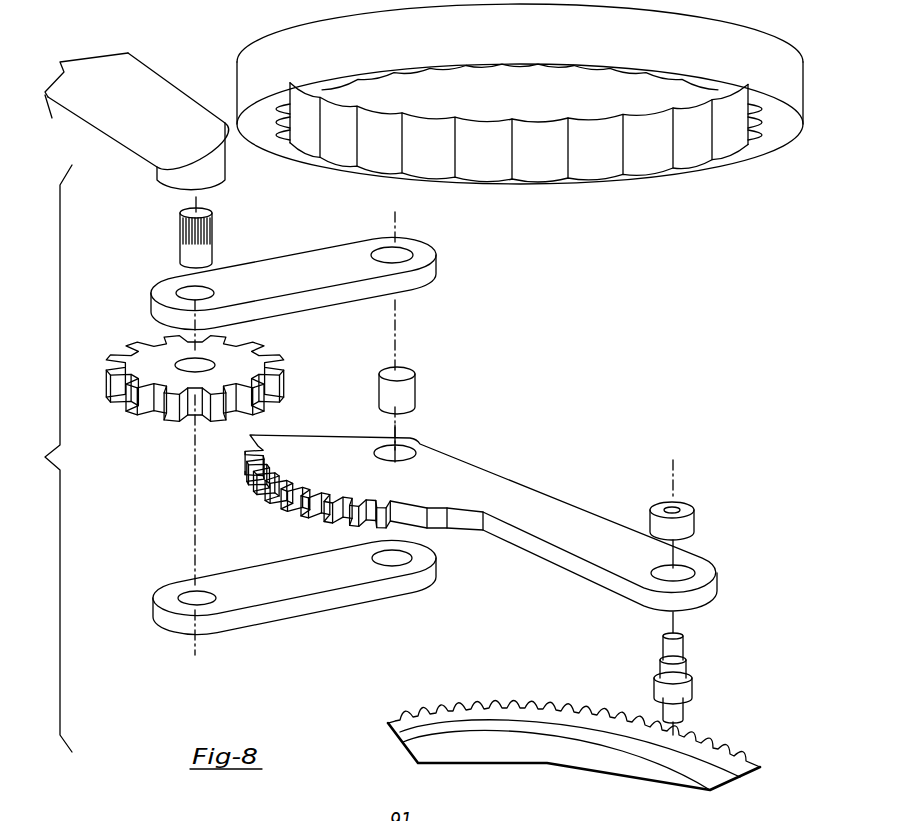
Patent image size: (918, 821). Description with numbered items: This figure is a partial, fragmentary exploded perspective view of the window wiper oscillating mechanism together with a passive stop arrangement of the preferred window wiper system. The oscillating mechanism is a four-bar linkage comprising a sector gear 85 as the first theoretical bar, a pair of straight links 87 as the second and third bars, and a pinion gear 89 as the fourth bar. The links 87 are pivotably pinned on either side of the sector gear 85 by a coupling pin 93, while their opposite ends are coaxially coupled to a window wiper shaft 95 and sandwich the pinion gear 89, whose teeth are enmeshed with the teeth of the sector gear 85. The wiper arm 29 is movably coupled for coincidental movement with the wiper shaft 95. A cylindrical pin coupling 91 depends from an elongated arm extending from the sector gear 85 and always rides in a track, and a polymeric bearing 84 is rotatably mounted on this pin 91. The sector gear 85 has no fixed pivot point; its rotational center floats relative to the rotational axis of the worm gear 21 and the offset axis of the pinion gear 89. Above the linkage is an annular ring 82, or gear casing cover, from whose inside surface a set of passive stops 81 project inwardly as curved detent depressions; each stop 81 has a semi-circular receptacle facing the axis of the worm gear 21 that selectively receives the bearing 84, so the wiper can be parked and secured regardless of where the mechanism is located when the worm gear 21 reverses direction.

The worm gear 21 is at (543, 742).
The wiper arm 29 is at (113, 132).
The passive stops 81 is at (540, 156).
The annular ring 82 is at (520, 144).
The polymeric bearing 84 is at (690, 530).
The sector gear 85 is at (517, 503).
The straight links 87 is at (360, 293).
The pinion gear 89 is at (172, 378).
The cylindrical pin coupling 91 is at (682, 678).
The coupling pin 93 is at (407, 392).
The window wiper shaft 95 is at (180, 258).